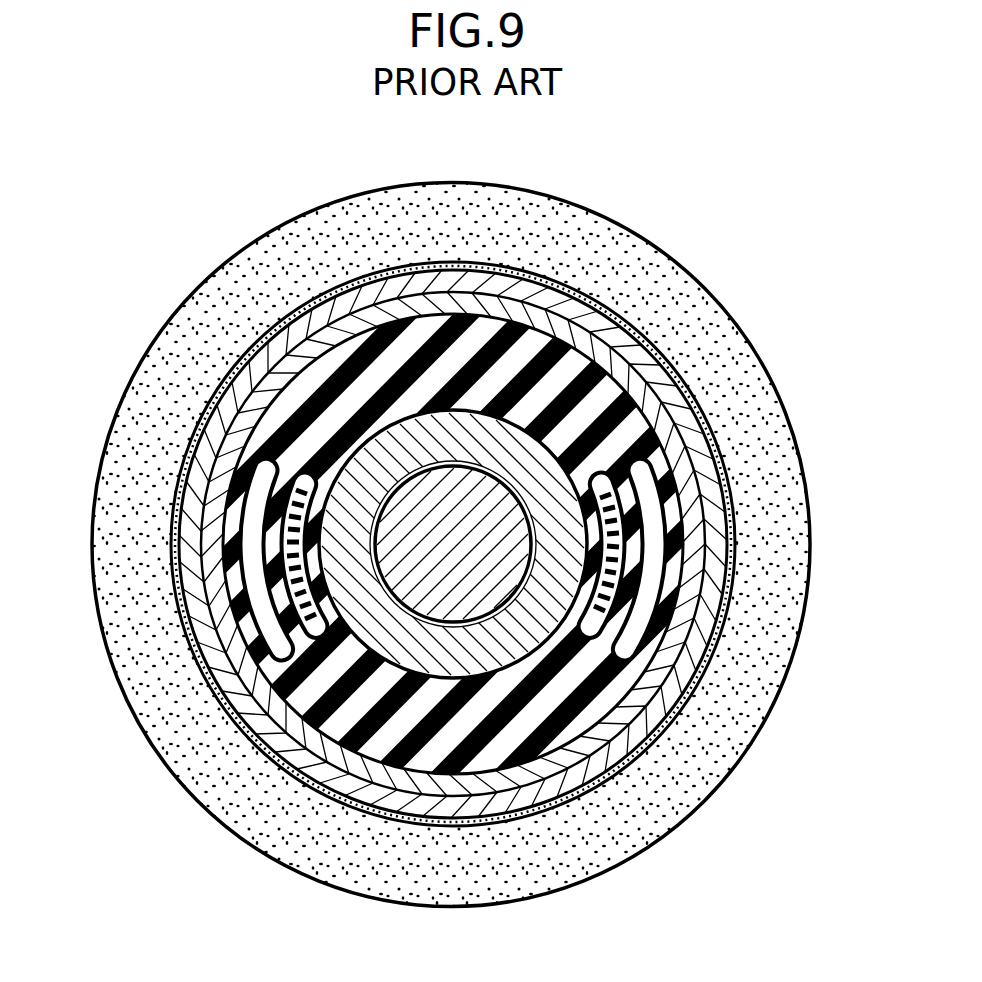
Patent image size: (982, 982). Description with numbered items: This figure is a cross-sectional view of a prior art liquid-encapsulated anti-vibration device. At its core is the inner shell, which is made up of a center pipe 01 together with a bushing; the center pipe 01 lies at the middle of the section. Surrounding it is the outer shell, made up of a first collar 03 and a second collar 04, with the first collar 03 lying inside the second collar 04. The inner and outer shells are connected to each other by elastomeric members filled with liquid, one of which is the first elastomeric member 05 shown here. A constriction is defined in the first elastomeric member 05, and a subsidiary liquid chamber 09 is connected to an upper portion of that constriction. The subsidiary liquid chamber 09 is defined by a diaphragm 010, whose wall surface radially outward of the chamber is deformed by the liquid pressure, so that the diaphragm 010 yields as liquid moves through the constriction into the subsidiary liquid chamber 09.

The center pipe 01 is at (468, 449).
The first collar 03 is at (224, 530).
The second collar 04 is at (188, 478).
The first elastomeric member 05 is at (430, 668).
The subsidiary liquid chamber 09 is at (308, 510).
The diaphragm 010 is at (241, 569).